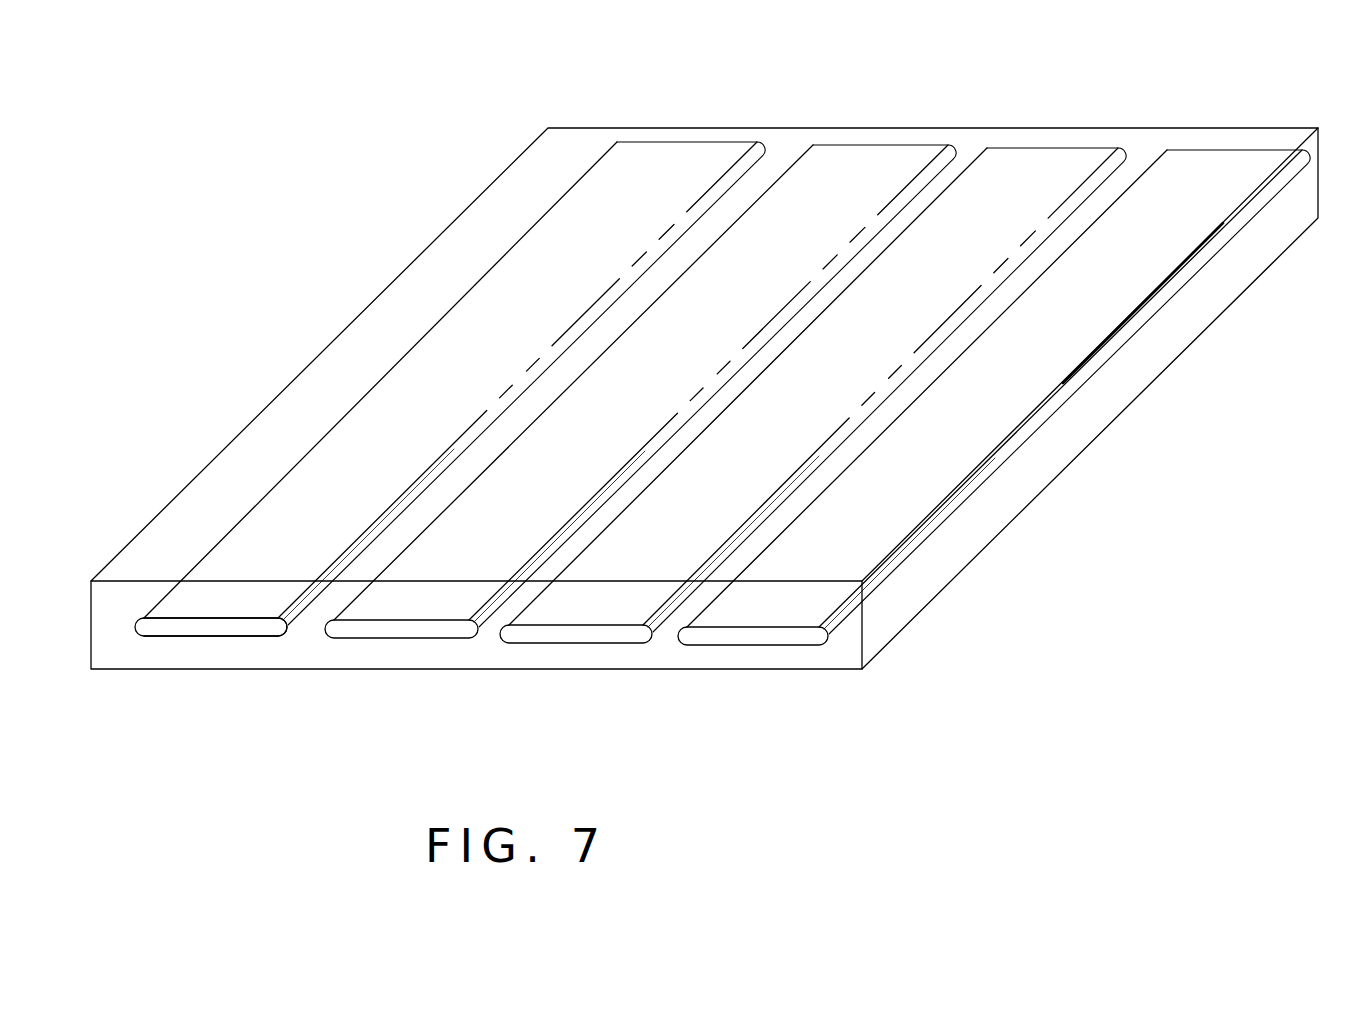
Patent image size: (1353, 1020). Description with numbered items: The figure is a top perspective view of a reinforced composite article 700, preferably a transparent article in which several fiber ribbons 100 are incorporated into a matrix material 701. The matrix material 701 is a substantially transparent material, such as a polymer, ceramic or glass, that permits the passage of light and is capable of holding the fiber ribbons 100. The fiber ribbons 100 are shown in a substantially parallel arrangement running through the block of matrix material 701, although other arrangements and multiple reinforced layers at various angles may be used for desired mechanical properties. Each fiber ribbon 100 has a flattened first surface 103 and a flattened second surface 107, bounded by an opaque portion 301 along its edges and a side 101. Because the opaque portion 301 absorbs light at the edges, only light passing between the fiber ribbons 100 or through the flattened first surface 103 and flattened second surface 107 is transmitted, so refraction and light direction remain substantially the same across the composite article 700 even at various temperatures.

The reinforced composite article 700 is at (715, 384).
The matrix material 701 is at (210, 493).
The fiber ribbon 100 is at (737, 384).
The side wall 101 is at (288, 630).
The flattened first surface 103 is at (203, 617).
The flattened second surface 107 is at (205, 638).
The opaque portion 301 is at (403, 497).